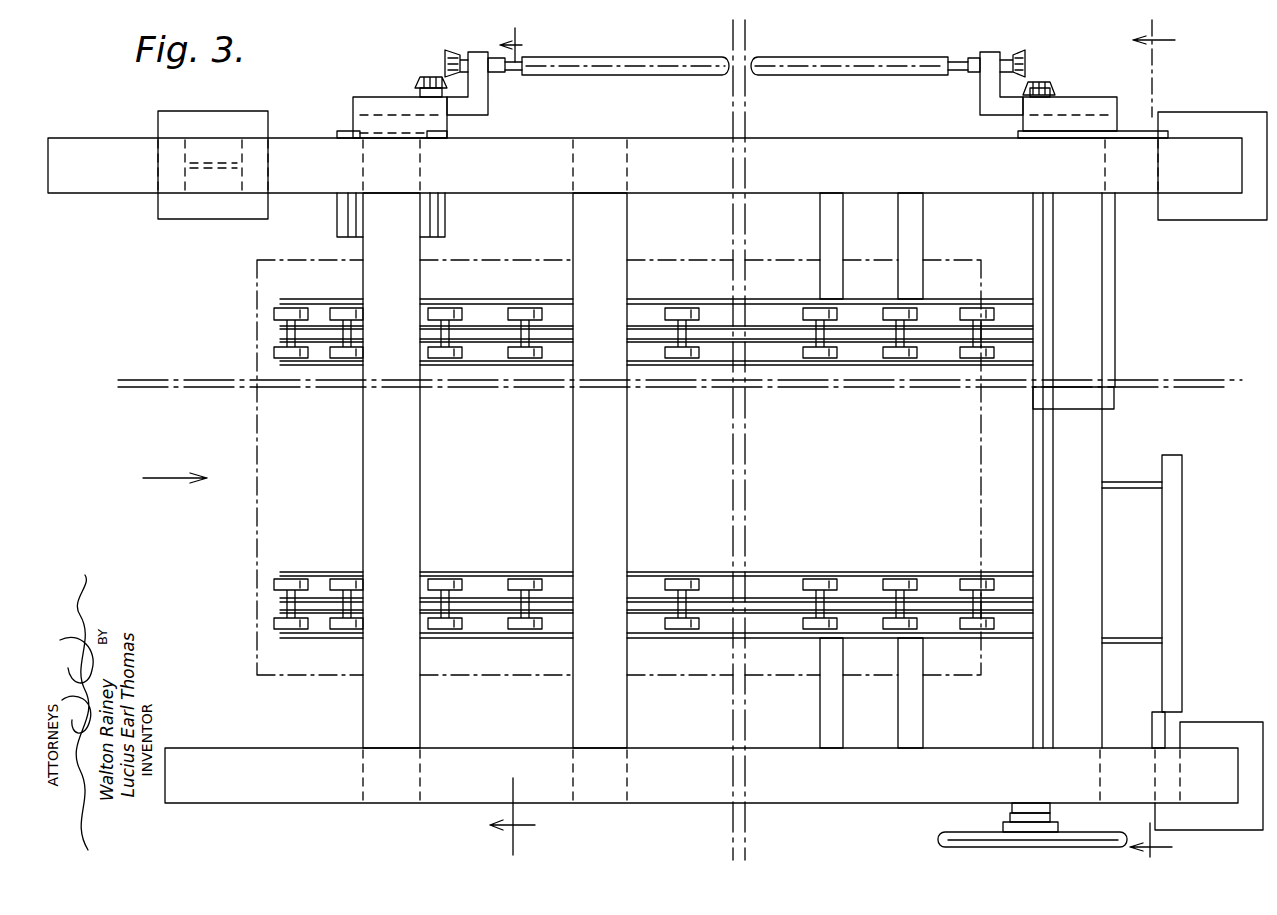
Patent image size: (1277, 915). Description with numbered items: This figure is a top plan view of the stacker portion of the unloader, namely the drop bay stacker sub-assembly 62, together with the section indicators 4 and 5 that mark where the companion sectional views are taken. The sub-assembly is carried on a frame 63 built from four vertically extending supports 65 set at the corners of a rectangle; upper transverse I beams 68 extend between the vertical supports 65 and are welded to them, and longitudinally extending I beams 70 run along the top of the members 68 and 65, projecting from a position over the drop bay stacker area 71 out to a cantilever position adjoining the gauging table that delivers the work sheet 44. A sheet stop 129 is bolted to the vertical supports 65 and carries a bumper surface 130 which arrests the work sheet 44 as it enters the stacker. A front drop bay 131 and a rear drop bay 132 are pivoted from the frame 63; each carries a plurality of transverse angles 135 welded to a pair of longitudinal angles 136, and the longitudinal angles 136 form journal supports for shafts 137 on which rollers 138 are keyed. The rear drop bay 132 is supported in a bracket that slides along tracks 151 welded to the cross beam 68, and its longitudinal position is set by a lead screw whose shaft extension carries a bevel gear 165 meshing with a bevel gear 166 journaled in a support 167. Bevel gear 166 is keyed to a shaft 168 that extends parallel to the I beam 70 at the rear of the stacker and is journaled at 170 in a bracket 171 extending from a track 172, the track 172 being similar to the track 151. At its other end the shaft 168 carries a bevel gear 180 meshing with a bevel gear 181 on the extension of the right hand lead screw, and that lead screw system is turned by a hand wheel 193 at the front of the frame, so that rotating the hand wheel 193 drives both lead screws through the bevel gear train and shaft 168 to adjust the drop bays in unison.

The section line 4- 4 is at (1161, 442).
The section line 5- 5 is at (522, 441).
The work sheet 44 is at (258, 497).
The drop bay stacker sub-assembly 62 is at (1142, 330).
The frame 63 is at (800, 148).
The vertically extending supports 65 is at (240, 111).
The upper transverse I beams 68 is at (482, 470).
The longitudinally extending I beams 70 is at (698, 471).
The drop bay stacker area 71 is at (778, 484).
The sheet stop 129 is at (1182, 563).
The bumper surface 130 is at (1162, 612).
The front drop bay 131 is at (882, 568).
The rear drop bay 132 is at (787, 376).
The transverse angles 135 is at (905, 233).
The longitudinal angles 136 is at (855, 300).
The shafts 137 is at (280, 338).
The rollers 138 is at (682, 310).
The tracks 151 is at (366, 102).
The bevel gear 165 is at (440, 76).
The bevel gear 166 is at (458, 52).
The support 167 is at (475, 108).
The shaft 168 is at (622, 60).
The journal 170 is at (490, 76).
The bracket 171 is at (984, 98).
The track 172 is at (1115, 400).
The bevel gear 180 is at (1026, 58).
The bevel gear 181 is at (1050, 86).
The hand wheel 193 is at (940, 838).